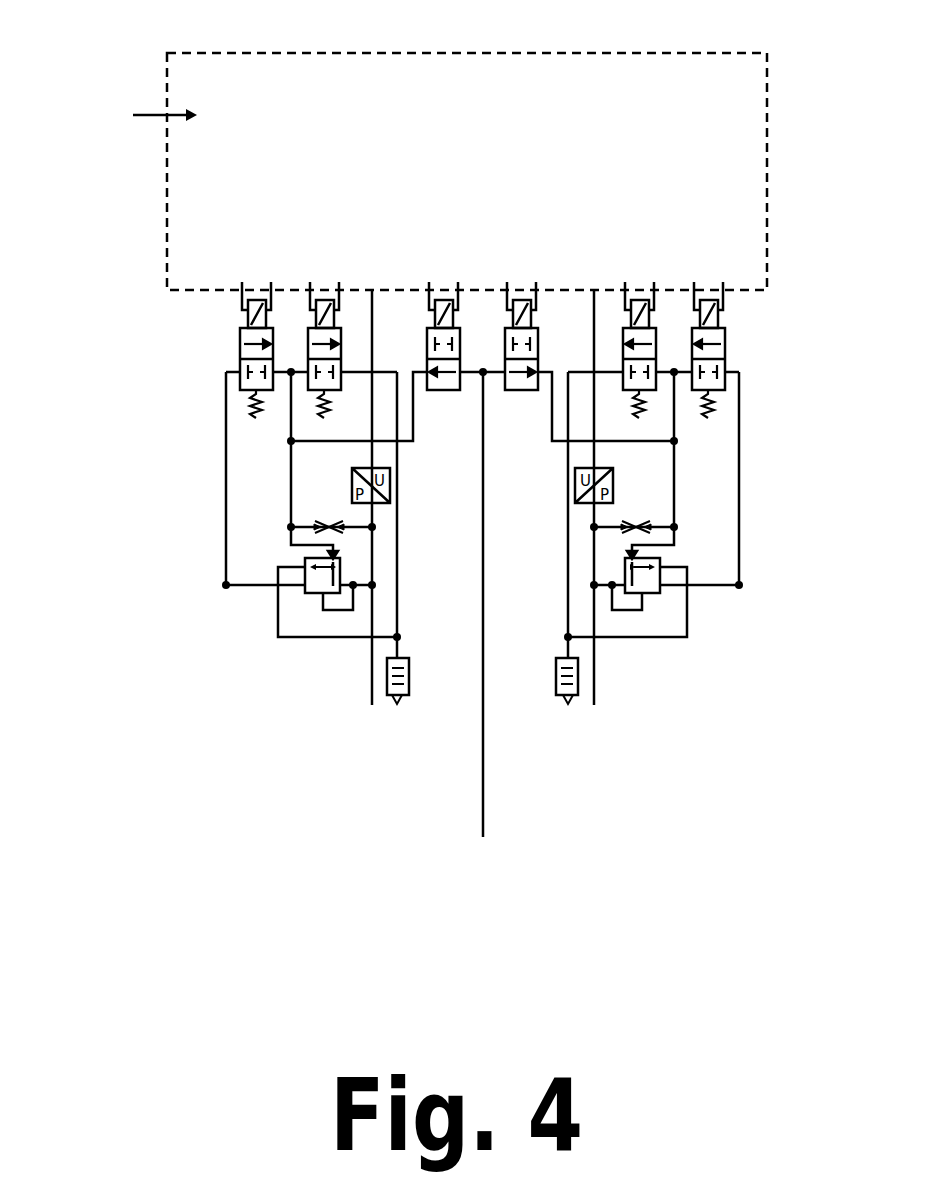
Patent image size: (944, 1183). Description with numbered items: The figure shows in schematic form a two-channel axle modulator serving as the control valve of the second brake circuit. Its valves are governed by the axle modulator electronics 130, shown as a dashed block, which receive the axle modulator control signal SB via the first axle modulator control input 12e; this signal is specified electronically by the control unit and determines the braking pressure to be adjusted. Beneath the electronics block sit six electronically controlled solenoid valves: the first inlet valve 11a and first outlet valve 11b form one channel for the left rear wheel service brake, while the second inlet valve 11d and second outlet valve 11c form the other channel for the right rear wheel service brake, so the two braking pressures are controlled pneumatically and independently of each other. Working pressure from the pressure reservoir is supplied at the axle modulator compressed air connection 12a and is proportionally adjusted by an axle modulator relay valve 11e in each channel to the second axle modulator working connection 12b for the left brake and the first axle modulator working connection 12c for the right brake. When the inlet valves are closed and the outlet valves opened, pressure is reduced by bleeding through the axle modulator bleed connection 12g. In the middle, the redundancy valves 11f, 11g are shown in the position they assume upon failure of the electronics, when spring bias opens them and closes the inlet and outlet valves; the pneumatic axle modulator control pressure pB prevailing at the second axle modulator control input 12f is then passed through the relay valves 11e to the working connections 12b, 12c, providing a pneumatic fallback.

The axle modulator electronics 130 is at (165, 300).
The first axle modulator control input 12e is at (166, 111).
The axle modulator control signal SB is at (163, 113).
The first inlet valve 11a is at (260, 305).
The first outlet valve 11b is at (330, 300).
The second outlet valve 11c is at (640, 307).
The second inlet valve 11d is at (703, 305).
The redundancy valve 11f is at (445, 300).
The redundancy valve 11g is at (520, 300).
The axle modulator relay valve 11e is at (722, 652).
The axle modulator compressed air connection 12a is at (778, 571).
The second axle modulator working connection 12b is at (370, 698).
The first axle modulator working connection 12c is at (596, 698).
The second axle modulator control input 12f is at (482, 813).
The axle modulator bleed connection 12g is at (585, 852).
The axle modulator control pressure pB is at (483, 768).